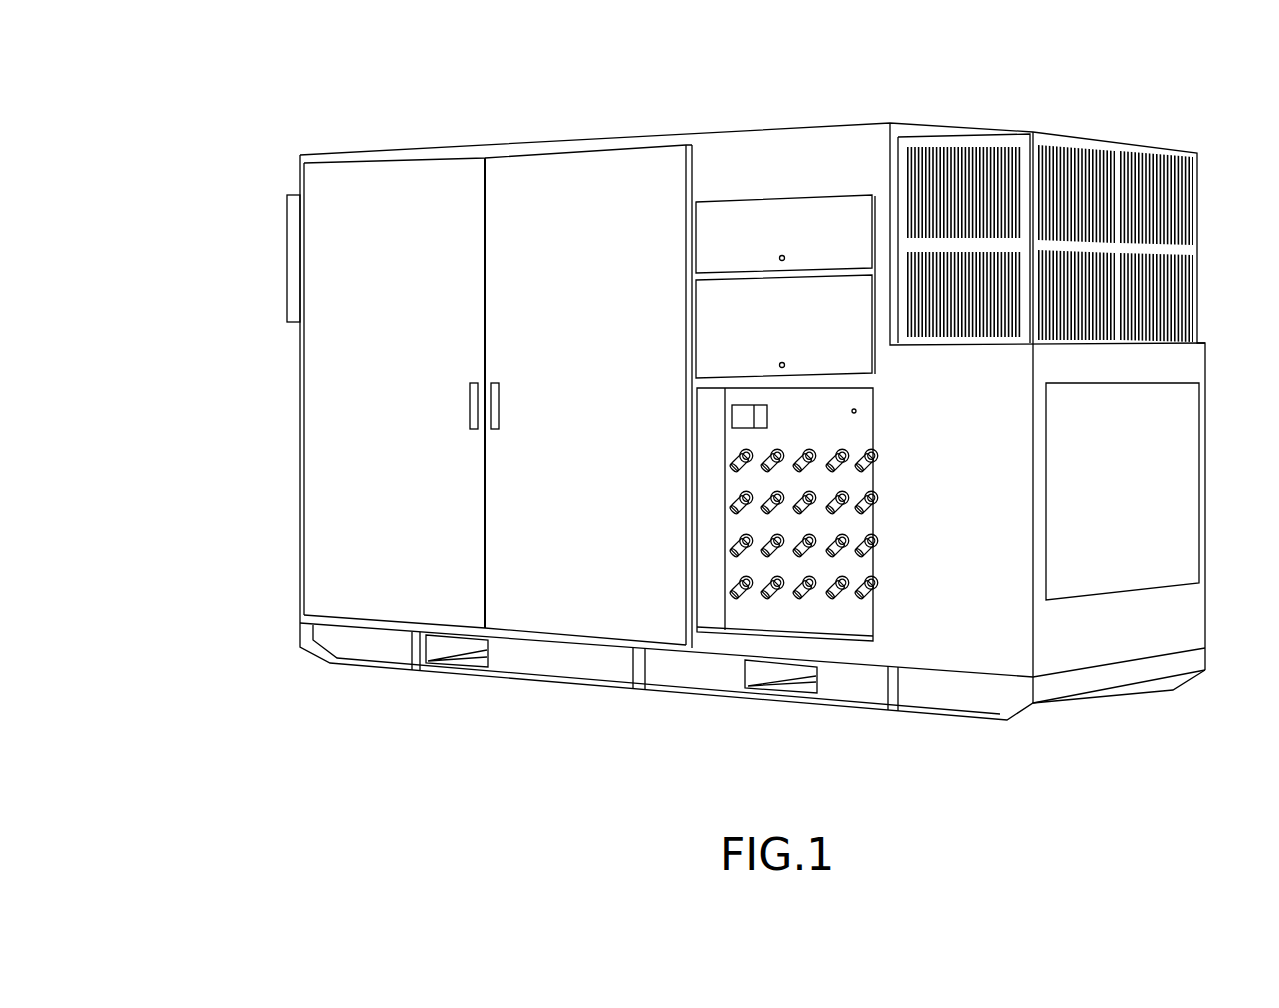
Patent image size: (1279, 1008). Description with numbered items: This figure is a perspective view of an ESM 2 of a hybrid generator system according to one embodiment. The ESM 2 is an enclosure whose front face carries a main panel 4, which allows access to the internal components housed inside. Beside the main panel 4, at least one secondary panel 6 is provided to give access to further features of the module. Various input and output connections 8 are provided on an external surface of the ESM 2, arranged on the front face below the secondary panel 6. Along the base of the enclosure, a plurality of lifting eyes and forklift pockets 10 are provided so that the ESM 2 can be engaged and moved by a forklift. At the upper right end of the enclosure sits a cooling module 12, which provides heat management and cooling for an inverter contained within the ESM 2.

The ESM 2 is at (266, 361).
The main panel 4 is at (391, 195).
The secondary panel 6 is at (810, 210).
The input and output connections 8 is at (724, 622).
The lifting eyes and forklift pockets 10 is at (451, 660).
The cooling module 12 is at (1133, 151).